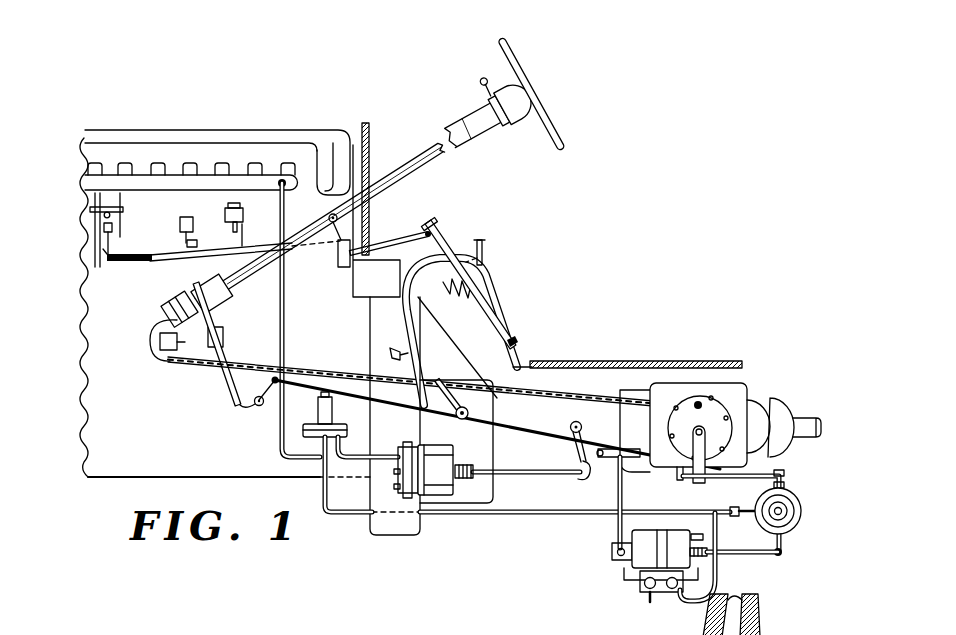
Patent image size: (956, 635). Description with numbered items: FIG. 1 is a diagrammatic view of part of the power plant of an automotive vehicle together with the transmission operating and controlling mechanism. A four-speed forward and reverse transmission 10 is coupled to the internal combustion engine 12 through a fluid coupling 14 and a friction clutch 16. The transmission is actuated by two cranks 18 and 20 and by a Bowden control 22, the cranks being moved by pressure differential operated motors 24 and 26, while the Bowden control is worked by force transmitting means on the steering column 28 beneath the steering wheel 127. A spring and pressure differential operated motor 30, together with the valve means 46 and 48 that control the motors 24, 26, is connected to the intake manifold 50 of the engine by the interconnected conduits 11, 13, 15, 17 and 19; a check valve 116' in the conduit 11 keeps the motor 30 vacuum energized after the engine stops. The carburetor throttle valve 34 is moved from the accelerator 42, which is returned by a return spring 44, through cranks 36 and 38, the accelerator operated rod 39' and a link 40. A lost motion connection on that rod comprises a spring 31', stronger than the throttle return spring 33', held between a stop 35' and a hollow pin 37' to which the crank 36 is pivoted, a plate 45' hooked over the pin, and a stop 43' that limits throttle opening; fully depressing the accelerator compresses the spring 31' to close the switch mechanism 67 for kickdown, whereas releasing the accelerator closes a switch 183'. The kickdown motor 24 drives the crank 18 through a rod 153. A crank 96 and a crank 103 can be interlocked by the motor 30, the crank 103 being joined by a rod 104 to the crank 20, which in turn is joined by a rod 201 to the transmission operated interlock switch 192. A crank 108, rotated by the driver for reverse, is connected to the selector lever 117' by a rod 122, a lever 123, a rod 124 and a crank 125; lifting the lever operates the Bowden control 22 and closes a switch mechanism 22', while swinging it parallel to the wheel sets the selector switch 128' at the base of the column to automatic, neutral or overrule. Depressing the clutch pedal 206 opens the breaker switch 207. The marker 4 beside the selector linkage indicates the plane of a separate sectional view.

The transmission 10 is at (628, 390).
The conduit 11 is at (742, 522).
The internal combustion engine 12 is at (205, 134).
The conduit 13 is at (717, 584).
The fluid coupling 14 is at (394, 530).
The conduit 15 is at (573, 513).
The friction clutch 16 is at (470, 500).
The conduit 17 is at (285, 318).
The crank 18 is at (588, 479).
The conduit 19 is at (380, 456).
The crank 20 is at (690, 435).
The Bowden control 22 is at (433, 371).
The switch mechanism 22' is at (156, 352).
The pressure differential operated motor 24 is at (437, 451).
The pressure differential operated motor 26 is at (620, 580).
The steering column 28 is at (390, 173).
The spring and pressure differential operated motor 30 is at (796, 526).
The spring 31' is at (230, 269).
The throttle return spring 33' is at (148, 220).
The carburetor throttle valve 34 is at (103, 231).
The stop 35' is at (171, 241).
The crank 36 is at (105, 252).
The hollow pin 37' is at (161, 231).
The crank 38 is at (341, 252).
The accelerator operated rod 39' is at (184, 273).
The link 40 is at (389, 243).
The accelerator 42 is at (482, 301).
The stop 43' is at (84, 227).
The return spring 44 is at (473, 291).
The lever 45' is at (82, 286).
The valve means 46 is at (315, 413).
The valve means 48 is at (661, 600).
The intake manifold 50 is at (256, 180).
The switch mechanism 67 is at (227, 216).
The crank 96 is at (782, 556).
The crank 103 is at (784, 485).
The rod 104 is at (719, 483).
The crank 108 is at (780, 469).
The check valve 116' is at (751, 500).
The selector lever 117' is at (484, 340).
The rod 122 is at (511, 430).
The lever 123 is at (245, 410).
The rod 124 is at (226, 381).
The crank 125 is at (211, 320).
The steering wheel 127 is at (571, 154).
The selector switch 128' is at (243, 334).
The rod 153 is at (506, 475).
The switch 183' is at (211, 232).
The transmission operated interlock switch 192 is at (678, 482).
The rod 201 is at (641, 532).
The clutch pedal 206 is at (483, 260).
The breaker switch 207 is at (392, 353).
The handle 4 is at (242, 283).